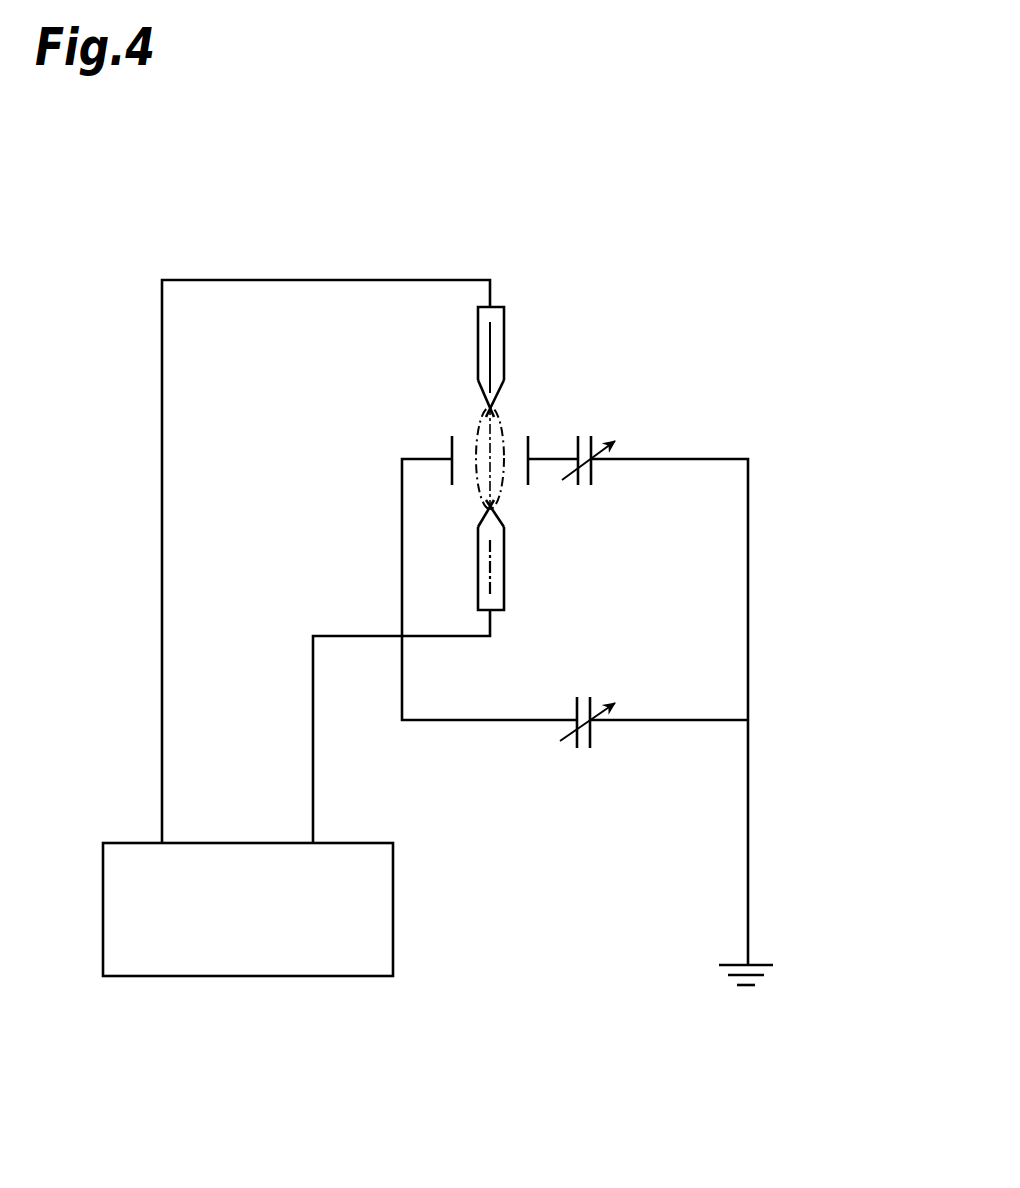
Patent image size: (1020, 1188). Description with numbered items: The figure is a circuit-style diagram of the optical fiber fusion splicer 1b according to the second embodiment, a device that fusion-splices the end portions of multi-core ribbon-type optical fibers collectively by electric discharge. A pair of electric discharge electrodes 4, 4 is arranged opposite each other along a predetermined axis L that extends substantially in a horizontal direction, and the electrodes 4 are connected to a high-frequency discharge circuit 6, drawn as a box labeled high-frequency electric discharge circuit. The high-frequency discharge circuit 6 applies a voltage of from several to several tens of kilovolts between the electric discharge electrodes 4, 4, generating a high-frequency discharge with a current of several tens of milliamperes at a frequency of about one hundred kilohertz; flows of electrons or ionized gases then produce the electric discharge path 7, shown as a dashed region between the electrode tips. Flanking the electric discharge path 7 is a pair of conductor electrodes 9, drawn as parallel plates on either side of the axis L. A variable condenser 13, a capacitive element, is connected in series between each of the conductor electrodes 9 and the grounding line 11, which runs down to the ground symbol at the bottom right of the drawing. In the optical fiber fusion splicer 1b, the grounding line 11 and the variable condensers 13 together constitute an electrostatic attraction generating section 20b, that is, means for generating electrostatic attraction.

The optical fiber fusion splicer 1b is at (769, 257).
The electrostatic attraction generating section 20b is at (789, 606).
The electric discharge electrode 4 is at (492, 332).
The axis L is at (478, 332).
The electric discharge path 7 is at (480, 422).
The conductor electrode 9 is at (452, 470).
The variable condenser 13 is at (600, 437).
The grounding line 11 is at (748, 838).
The high-frequency discharge circuit 6 is at (393, 921).